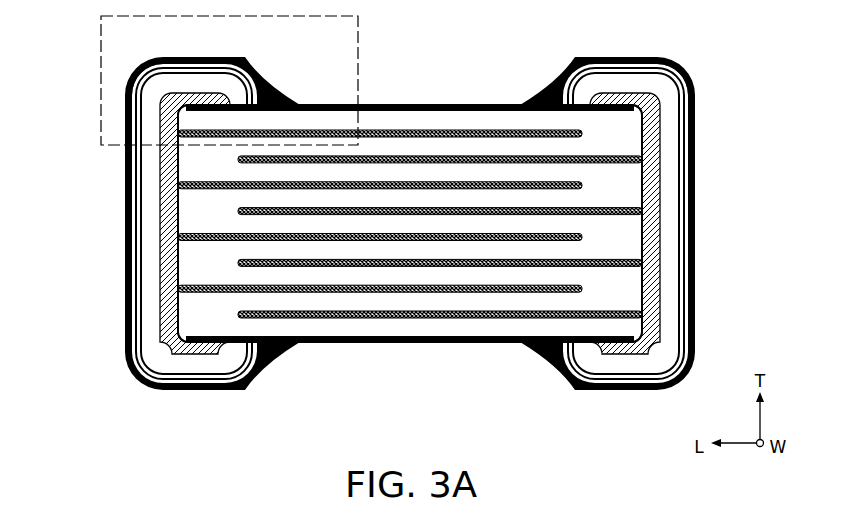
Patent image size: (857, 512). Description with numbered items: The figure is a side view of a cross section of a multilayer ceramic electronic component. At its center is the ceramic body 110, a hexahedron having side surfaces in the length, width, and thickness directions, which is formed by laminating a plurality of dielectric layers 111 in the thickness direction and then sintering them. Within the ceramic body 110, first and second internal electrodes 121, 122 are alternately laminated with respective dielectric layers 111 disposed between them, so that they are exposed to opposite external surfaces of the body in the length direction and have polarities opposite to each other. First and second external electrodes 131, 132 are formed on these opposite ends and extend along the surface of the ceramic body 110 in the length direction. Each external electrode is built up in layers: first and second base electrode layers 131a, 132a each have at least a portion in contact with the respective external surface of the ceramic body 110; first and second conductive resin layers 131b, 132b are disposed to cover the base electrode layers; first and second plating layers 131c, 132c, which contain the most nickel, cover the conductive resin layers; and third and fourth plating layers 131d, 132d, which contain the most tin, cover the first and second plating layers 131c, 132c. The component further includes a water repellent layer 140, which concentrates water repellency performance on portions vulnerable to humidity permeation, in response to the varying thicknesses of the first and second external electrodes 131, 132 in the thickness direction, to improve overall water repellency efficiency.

The ceramic body 110 is at (410, 188).
The dielectric layer 111 is at (488, 147).
The first internal electrode 121 is at (436, 132).
The second internal electrode 122 is at (539, 158).
The first external electrode 131 is at (132, 222).
The first base electrode layer 131a is at (161, 190).
The first conductive resin layer 131b is at (153, 217).
The first plating layer 131c is at (124, 250).
The third plating layer 131d is at (60, 178).
The second external electrode 132 is at (689, 222).
The second base electrode layer 132a is at (659, 165).
The second conductive resin layer 132b is at (668, 192).
The second plating layer 132c is at (690, 227).
The fourth plating layer 132d is at (756, 153).
The water repellent layer 140 is at (281, 93).